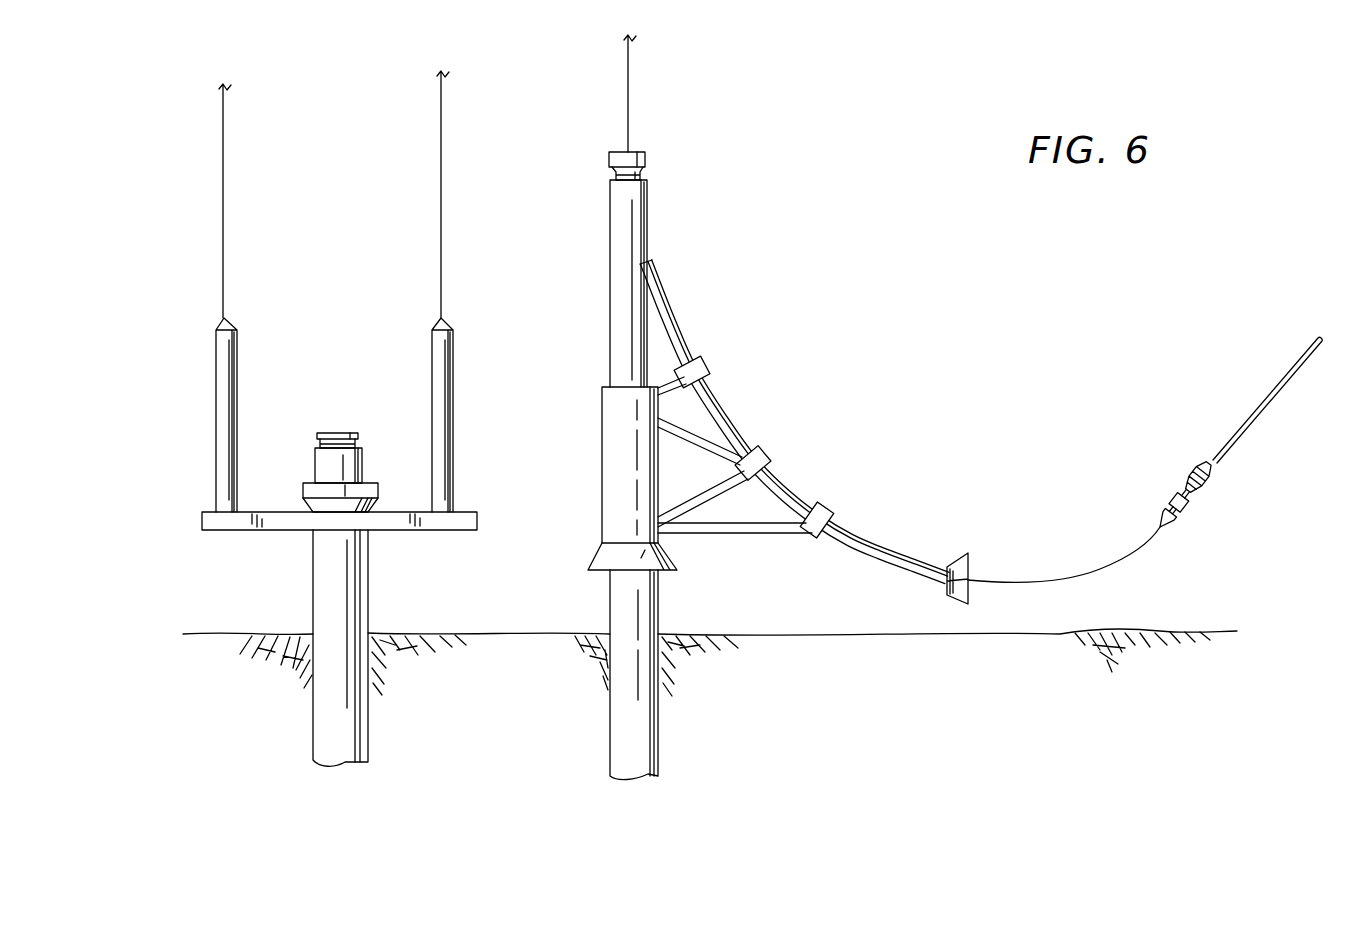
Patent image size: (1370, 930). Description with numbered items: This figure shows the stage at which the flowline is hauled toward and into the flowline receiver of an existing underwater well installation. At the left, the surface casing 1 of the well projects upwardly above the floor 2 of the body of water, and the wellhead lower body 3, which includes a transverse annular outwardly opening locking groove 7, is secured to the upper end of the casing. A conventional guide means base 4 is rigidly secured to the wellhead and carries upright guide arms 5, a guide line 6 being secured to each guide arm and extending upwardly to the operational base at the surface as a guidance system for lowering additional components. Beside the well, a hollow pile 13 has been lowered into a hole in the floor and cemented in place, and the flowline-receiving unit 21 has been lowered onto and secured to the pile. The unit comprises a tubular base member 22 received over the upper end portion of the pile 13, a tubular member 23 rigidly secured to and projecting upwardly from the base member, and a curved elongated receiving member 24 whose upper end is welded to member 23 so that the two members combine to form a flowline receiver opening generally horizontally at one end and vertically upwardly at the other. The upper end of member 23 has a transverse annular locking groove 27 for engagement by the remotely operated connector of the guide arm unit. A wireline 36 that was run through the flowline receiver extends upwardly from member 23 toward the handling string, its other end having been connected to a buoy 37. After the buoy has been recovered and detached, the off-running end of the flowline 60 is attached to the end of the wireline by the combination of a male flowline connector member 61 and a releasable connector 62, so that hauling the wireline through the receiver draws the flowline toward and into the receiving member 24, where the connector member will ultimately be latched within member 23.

The surface casing 1 is at (352, 591).
The floor 2 is at (261, 632).
The wellhead lower body 3 is at (351, 456).
The guide means base 4 is at (283, 528).
The guide arm 5 is at (236, 382).
The guide line 6 is at (223, 215).
The locking groove 7 is at (357, 446).
The hollow pile 13 is at (650, 609).
The flowline-receiving unit 21 is at (735, 405).
The tubular base member 22 is at (610, 447).
The tubular member 23 is at (622, 248).
The elongated receiving member 24 is at (862, 540).
The locking groove 27 is at (642, 173).
The wireline 36 is at (628, 95).
The buoy 37 is at (1078, 572).
The flowline 60 is at (1270, 406).
The male flowline connector member 61 is at (1209, 460).
The releasable connector 62 is at (1173, 524).